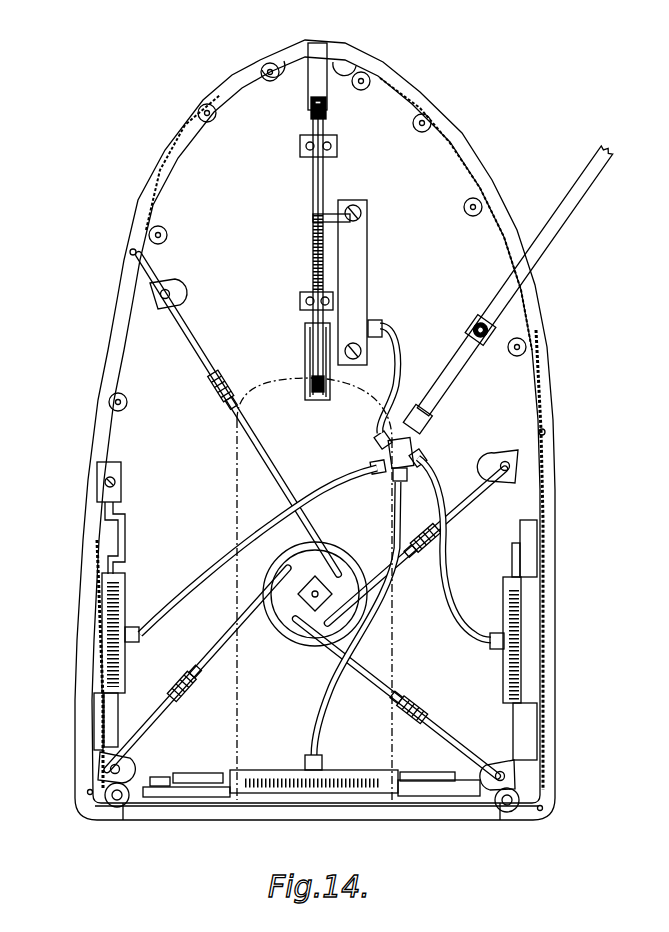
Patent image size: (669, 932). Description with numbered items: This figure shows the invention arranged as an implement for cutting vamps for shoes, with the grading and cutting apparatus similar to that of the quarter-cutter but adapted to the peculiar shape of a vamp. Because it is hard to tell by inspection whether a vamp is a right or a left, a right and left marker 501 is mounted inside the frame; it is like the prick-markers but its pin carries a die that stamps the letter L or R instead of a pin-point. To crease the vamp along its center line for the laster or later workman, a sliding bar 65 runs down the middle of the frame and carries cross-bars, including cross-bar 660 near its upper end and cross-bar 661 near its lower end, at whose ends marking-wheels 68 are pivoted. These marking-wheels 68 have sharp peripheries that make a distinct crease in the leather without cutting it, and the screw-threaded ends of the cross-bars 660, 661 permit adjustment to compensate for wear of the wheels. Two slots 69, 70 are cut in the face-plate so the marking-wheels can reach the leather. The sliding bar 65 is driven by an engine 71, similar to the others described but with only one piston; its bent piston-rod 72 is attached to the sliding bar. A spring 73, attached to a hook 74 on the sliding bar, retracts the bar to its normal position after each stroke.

The slot 70 is at (320, 75).
The cross-bar 660 is at (328, 110).
The marking-wheel 68 is at (311, 111).
The sliding bar 65 is at (328, 180).
The hook 74 is at (312, 218).
The piston-rod 72 is at (361, 214).
The spring 73 is at (311, 262).
The engine 71 is at (369, 282).
The slot 69 is at (304, 345).
The cross-bar 661 is at (300, 393).
The right and left marker 501 is at (104, 470).